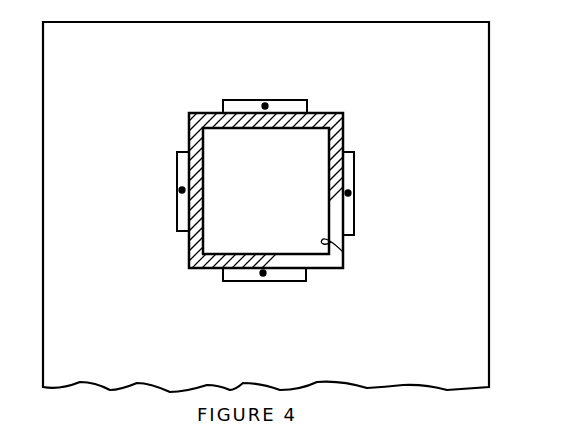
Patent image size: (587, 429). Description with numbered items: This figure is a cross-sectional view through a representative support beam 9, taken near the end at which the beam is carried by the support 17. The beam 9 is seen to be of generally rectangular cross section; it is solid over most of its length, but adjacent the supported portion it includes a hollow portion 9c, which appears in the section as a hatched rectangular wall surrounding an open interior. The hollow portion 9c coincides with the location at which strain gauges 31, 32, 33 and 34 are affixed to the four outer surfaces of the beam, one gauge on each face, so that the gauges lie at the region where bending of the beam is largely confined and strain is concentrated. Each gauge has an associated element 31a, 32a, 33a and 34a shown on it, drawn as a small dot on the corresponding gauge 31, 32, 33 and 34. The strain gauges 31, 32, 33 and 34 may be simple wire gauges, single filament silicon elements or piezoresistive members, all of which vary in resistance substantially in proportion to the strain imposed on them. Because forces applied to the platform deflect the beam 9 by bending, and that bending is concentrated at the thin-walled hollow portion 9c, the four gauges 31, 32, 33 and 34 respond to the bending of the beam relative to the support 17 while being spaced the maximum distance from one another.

The support beam 9 is at (344, 120).
The hollow portion 9c is at (343, 252).
The support 17 is at (485, 317).
The strain gauge 31 is at (294, 98).
The top contact terminal 31a is at (248, 103).
The strain gauge 32 is at (171, 204).
The left contact terminal 32a is at (177, 155).
The strain gauge 33 is at (299, 284).
The bottom contact terminal 33a is at (250, 277).
The strain gauge 34 is at (360, 227).
The right contact terminal 34a is at (357, 163).